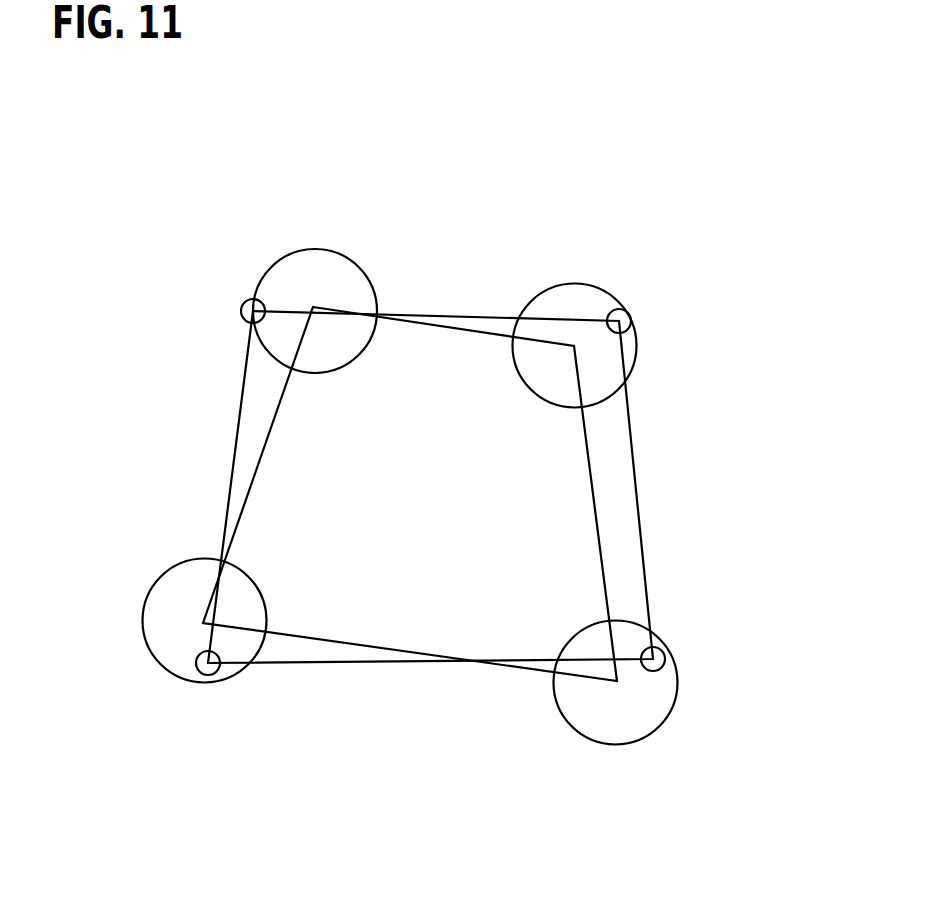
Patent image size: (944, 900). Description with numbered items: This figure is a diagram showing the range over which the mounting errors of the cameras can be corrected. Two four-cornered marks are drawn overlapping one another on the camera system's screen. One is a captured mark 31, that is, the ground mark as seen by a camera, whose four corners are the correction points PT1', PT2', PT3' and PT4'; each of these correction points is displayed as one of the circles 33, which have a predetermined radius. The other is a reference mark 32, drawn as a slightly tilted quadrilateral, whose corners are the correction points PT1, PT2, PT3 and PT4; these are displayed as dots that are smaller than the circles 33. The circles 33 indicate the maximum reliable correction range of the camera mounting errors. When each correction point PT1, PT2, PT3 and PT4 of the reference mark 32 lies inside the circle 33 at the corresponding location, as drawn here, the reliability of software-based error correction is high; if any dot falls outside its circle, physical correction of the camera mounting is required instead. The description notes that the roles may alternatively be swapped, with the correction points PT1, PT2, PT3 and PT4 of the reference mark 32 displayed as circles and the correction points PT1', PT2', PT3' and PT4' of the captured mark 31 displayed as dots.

The captured mark 31 is at (599, 530).
The reference mark 32 is at (633, 433).
The circles 33 is at (343, 263).
The correction point of the reference mark PT1 is at (209, 296).
The correction point of the reference mark PT2 is at (660, 301).
The correction point of the reference mark PT3 is at (684, 718).
The correction point of the reference mark PT4 is at (145, 681).
The correction point of the captured mark PT1' is at (359, 368).
The correction point of the captured mark PT2' is at (547, 368).
The correction point of the captured mark PT3' is at (586, 667).
The correction point of the captured mark PT4' is at (248, 621).